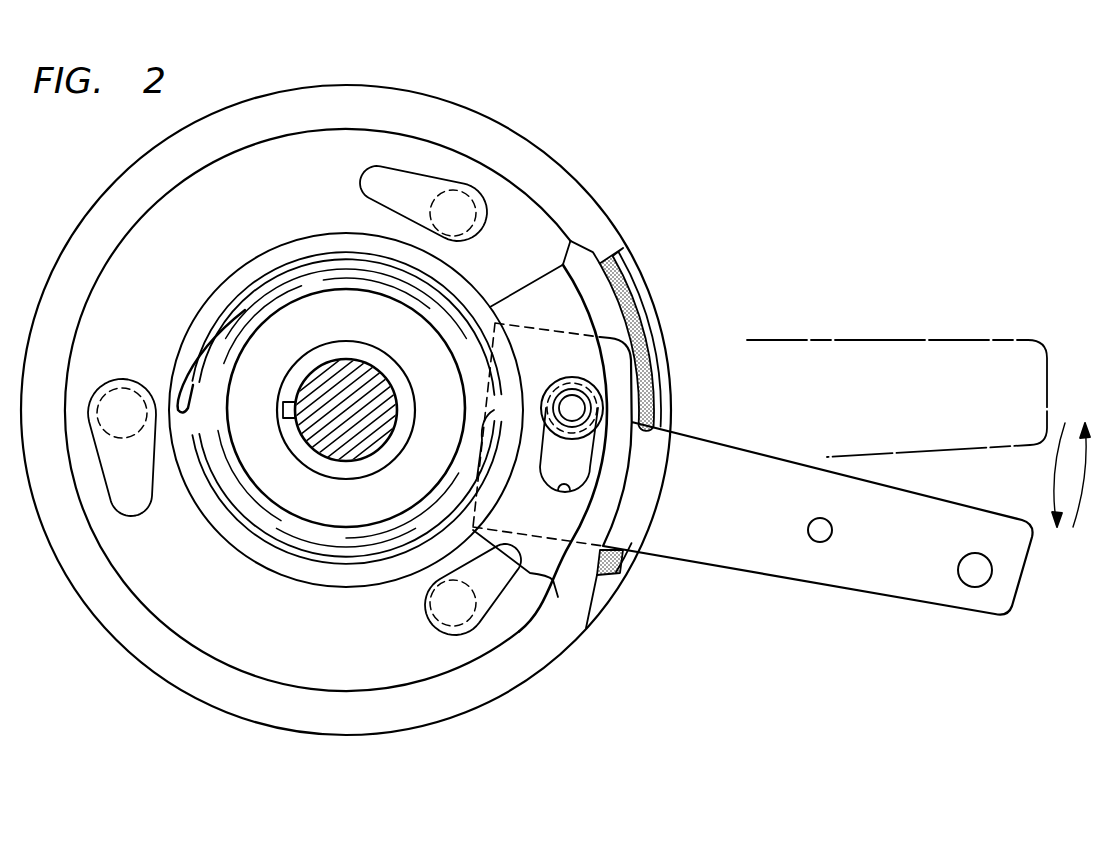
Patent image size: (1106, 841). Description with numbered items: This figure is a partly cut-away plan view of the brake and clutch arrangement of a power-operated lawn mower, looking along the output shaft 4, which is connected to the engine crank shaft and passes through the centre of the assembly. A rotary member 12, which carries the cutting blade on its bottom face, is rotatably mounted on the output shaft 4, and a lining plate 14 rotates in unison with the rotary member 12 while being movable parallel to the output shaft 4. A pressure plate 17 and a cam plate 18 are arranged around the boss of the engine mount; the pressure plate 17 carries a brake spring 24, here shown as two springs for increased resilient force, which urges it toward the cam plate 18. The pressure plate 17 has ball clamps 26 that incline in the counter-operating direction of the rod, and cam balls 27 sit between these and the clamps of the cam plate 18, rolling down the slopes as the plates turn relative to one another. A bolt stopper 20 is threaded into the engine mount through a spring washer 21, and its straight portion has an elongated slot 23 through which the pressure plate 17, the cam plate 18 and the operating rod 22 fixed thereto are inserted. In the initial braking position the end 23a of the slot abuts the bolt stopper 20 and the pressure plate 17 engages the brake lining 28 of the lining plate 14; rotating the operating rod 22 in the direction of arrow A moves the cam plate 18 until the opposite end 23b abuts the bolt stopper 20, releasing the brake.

The output shaft 4 is at (372, 437).
The rotary member 12 is at (662, 330).
The lining plate 14 is at (582, 265).
The pressure plate 17 is at (542, 157).
The cam plate 18 is at (567, 300).
The bolt stopper 20 is at (560, 403).
The spring washer 21 is at (577, 438).
The operating rod 22 is at (930, 595).
The elongated slot 23 is at (568, 465).
The end of the elongated slot 23a is at (588, 385).
The end of the elongated slot 23b is at (575, 492).
The brake spring 24 is at (420, 257).
The ball clamps 26 is at (368, 174).
The cam balls 27 is at (478, 236).
The brake lining 28 is at (630, 287).